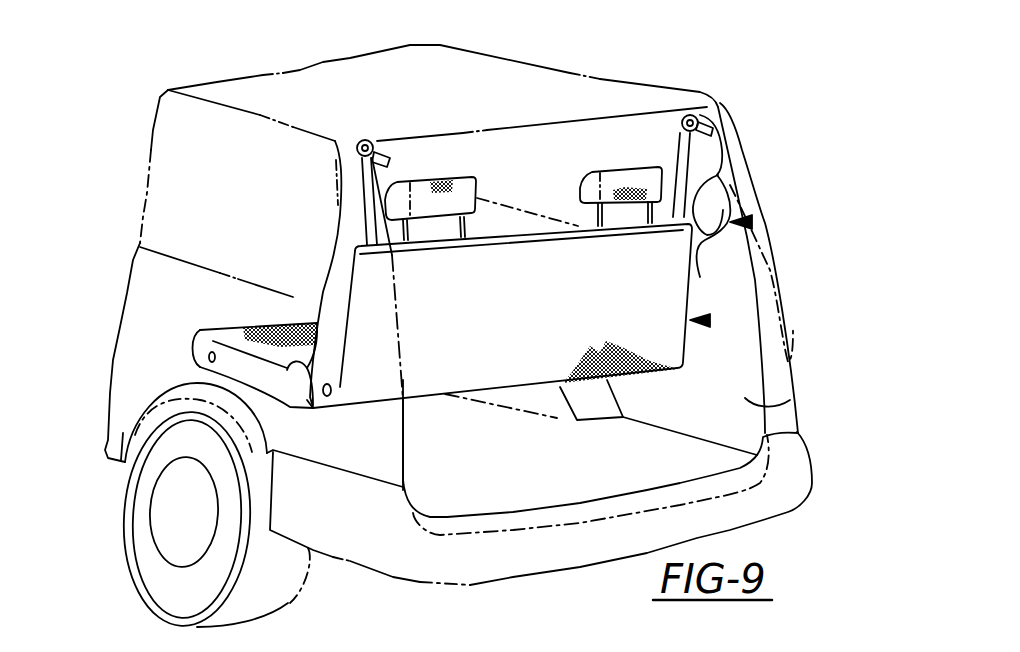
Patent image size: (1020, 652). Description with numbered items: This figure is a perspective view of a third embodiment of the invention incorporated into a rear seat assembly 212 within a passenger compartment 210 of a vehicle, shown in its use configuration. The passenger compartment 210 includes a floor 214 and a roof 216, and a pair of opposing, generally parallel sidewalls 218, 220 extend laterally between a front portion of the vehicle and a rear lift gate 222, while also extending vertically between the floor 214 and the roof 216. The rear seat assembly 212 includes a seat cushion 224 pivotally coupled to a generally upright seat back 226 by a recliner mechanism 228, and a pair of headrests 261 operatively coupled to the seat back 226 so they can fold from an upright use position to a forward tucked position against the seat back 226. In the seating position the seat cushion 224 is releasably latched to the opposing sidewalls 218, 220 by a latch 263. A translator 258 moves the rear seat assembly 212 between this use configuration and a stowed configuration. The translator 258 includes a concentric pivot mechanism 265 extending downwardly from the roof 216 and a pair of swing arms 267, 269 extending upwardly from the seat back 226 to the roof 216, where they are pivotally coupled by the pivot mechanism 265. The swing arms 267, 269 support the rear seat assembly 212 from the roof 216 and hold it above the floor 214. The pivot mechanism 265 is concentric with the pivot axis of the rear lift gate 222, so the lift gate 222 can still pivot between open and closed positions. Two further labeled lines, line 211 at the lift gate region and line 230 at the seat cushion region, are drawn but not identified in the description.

The passenger compartment 210 is at (752, 222).
The rear pillar belt line 211 is at (777, 268).
The rear seat assembly 212 is at (710, 322).
The floor 214 is at (377, 462).
The roof 216 is at (642, 85).
The sidewall 218 is at (790, 400).
The sidewall 220 is at (153, 267).
The rear lift gate 222 is at (775, 243).
The seat cushion 224 is at (284, 328).
The seat back 226 is at (295, 400).
The recliner mechanism 228 is at (333, 390).
The seat cushion 230 is at (241, 327).
The translator 258 is at (747, 168).
The headrests 261 is at (434, 183).
The latch 263 is at (205, 357).
The concentric pivot mechanism 265 is at (370, 142).
The swing arm 267 is at (360, 202).
The swing arm 269 is at (682, 160).